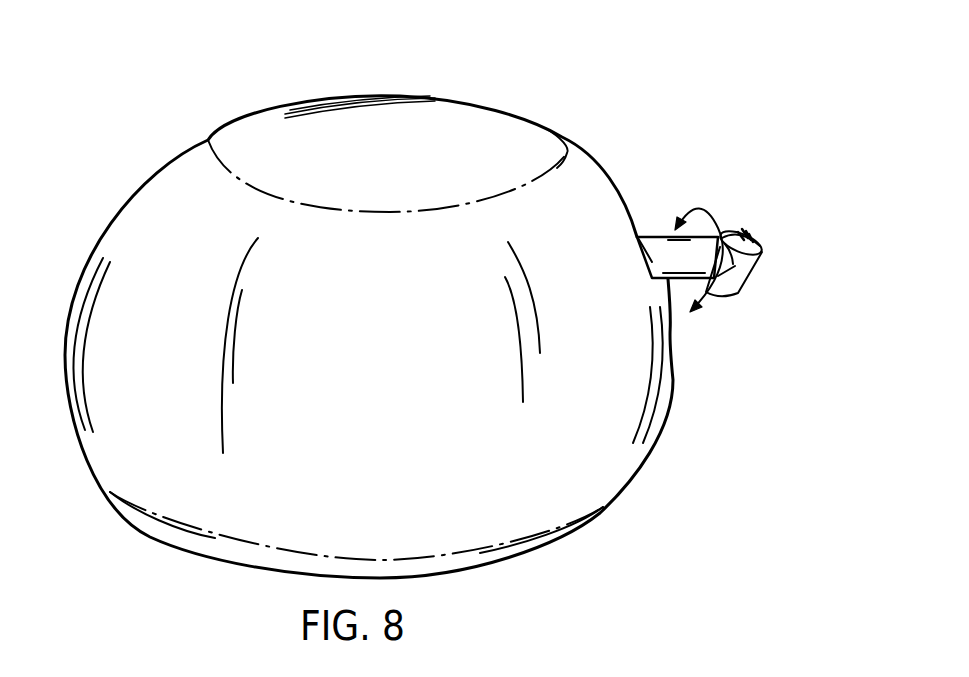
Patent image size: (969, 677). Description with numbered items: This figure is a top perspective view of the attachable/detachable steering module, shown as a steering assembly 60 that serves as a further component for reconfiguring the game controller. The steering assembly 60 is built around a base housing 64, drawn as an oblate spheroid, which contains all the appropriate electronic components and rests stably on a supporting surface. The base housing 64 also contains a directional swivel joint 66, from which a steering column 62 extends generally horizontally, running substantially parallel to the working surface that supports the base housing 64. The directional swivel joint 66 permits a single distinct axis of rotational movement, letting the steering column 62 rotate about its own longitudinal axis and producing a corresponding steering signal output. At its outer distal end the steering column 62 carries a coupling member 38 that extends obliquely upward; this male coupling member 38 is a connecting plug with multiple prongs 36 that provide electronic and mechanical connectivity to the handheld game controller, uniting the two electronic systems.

The prongs 36 is at (748, 236).
The coupling member 38 is at (760, 244).
The steering assembly 60 is at (413, 133).
The steering column 62 is at (678, 262).
The base housing 64 is at (195, 198).
The directional swivel joint 66 is at (662, 237).